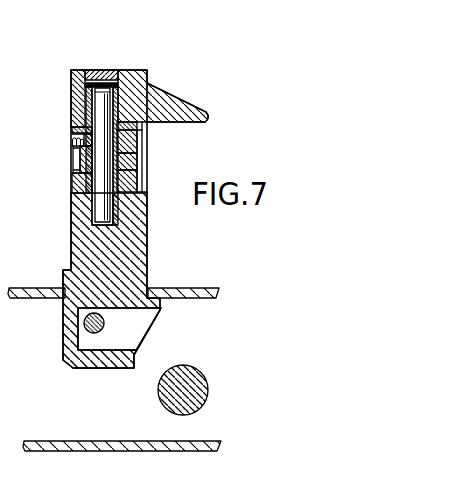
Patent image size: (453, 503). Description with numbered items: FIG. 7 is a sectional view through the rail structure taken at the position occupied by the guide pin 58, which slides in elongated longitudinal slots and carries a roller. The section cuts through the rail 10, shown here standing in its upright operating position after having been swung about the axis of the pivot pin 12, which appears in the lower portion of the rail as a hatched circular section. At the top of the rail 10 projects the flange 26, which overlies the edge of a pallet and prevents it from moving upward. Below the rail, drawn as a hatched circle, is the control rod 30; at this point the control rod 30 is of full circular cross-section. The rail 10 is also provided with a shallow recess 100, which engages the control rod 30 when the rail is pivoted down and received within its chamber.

The rail 10 is at (117, 219).
The flange 26 is at (189, 104).
The guide pin 58 is at (128, 215).
The shallow recess 100 is at (140, 236).
The pivot pin 12 is at (105, 326).
The control rod 30 is at (203, 390).